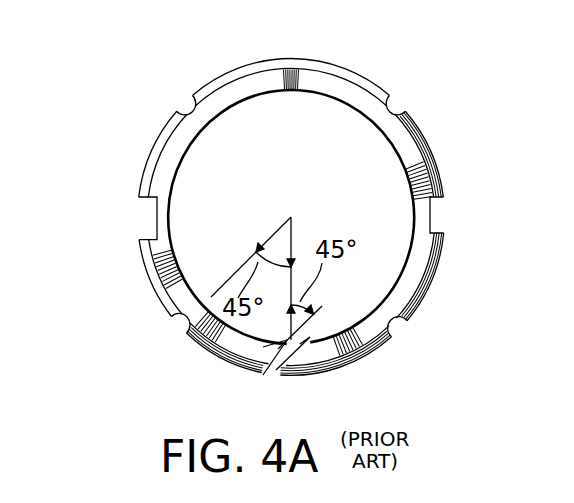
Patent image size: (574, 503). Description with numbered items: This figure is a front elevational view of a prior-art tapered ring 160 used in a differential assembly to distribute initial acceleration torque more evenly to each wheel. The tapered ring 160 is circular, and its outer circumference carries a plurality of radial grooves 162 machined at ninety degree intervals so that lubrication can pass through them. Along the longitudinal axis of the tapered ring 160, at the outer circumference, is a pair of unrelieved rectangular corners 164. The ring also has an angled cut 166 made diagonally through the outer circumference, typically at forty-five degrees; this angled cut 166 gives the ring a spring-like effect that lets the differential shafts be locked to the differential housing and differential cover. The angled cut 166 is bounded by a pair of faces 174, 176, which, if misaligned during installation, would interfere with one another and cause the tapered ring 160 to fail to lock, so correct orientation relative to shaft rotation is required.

The tapered ring 160 is at (157, 77).
The radial grooves 162 is at (397, 107).
The unrelieved rectangular corners 164 is at (437, 213).
The angled cut 166 is at (268, 370).
The face 174 is at (265, 347).
The face 176 is at (310, 347).